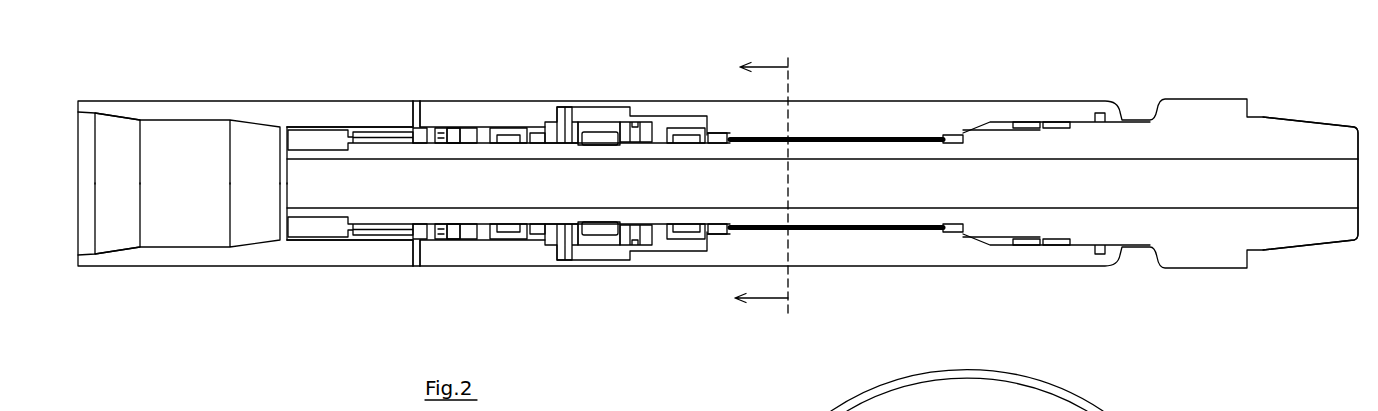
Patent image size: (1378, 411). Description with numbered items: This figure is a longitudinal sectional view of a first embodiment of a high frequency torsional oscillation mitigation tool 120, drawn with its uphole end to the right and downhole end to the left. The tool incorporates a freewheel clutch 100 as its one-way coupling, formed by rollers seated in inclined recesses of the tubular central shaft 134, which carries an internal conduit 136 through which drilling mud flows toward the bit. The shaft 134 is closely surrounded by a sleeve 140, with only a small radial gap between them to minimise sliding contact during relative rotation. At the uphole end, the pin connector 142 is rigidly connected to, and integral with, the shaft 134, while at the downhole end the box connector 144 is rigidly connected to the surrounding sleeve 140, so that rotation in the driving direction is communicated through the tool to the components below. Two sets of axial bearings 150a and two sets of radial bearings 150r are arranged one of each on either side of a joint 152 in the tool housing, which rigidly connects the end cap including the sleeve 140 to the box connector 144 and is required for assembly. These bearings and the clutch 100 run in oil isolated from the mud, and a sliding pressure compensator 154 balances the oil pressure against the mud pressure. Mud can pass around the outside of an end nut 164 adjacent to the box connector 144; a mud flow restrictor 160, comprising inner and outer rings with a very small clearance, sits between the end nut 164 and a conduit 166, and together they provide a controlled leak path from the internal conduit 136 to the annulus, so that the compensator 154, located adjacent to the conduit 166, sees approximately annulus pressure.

The freewheel clutch 100 is at (862, 99).
The high frequency torsional oscillation mitigation tool 120 is at (256, 317).
The central shaft 134 is at (982, 220).
The internal conduit 136 is at (1135, 208).
The sleeve 140 is at (900, 110).
The uphole pin connector 142 is at (1317, 250).
The downhole box connector 144 is at (120, 240).
The axial bearings 150a is at (548, 97).
The radial bearings 150r is at (1049, 101).
The joint 152 is at (603, 82).
The pressure equaliser or compensator 154 is at (453, 135).
The mud flow restrictor 160 is at (359, 110).
The end nut 164 is at (317, 140).
The conduit 166 is at (413, 117).